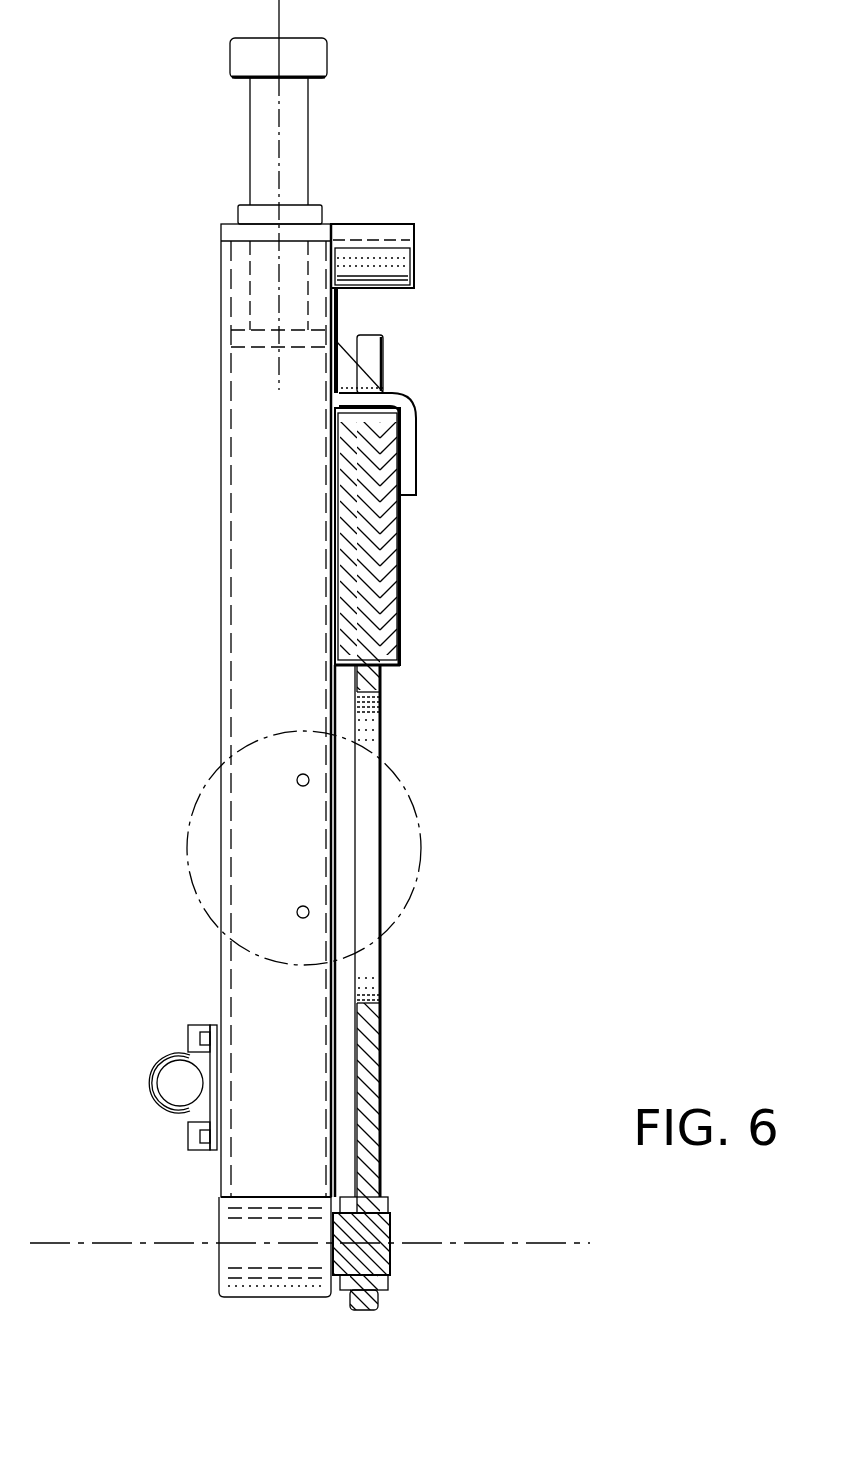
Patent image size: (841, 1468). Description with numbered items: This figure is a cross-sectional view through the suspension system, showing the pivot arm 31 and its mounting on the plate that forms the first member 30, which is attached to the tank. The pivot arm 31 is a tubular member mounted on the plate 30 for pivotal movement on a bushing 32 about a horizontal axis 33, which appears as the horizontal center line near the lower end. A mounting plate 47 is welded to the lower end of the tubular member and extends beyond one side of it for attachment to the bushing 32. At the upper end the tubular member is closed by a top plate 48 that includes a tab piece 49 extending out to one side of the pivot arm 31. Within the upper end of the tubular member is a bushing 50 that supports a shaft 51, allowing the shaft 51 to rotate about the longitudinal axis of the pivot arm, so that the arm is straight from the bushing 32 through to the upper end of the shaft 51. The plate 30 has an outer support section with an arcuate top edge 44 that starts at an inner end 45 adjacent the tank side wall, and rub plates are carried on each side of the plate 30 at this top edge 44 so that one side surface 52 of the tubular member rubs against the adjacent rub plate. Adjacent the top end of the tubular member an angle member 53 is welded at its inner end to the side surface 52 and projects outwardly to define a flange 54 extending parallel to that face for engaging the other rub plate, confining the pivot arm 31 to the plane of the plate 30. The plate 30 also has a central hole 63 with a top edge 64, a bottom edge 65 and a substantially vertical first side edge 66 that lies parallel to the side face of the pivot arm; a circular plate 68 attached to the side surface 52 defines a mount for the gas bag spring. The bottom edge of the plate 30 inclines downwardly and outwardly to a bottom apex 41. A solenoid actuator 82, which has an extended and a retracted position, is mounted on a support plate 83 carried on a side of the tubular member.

The side surface 52 is at (282, 15).
The shaft 51 is at (252, 116).
The top plate 48 is at (234, 206).
The tab piece 49 is at (398, 220).
The bushing 50 is at (230, 268).
The inner end 45 is at (373, 328).
The arcuate top edge 44 is at (370, 356).
The angle member 53 is at (426, 409).
The flange 54 is at (422, 464).
The pivot arm 31 is at (243, 623).
The top edge 64 is at (372, 700).
The central hole 63 is at (384, 825).
The first side edge 66 is at (374, 892).
The bottom edge 65 is at (372, 987).
The first member 30 is at (392, 1081).
The bottom apex 41 is at (372, 1300).
The circular plate 68 is at (190, 808).
The solenoid actuator 82 is at (174, 1070).
The support plate 83 is at (180, 1138).
The bushing 32 is at (258, 1189).
The mounting plate 47 is at (255, 1300).
The horizontal axis 33 is at (447, 1240).